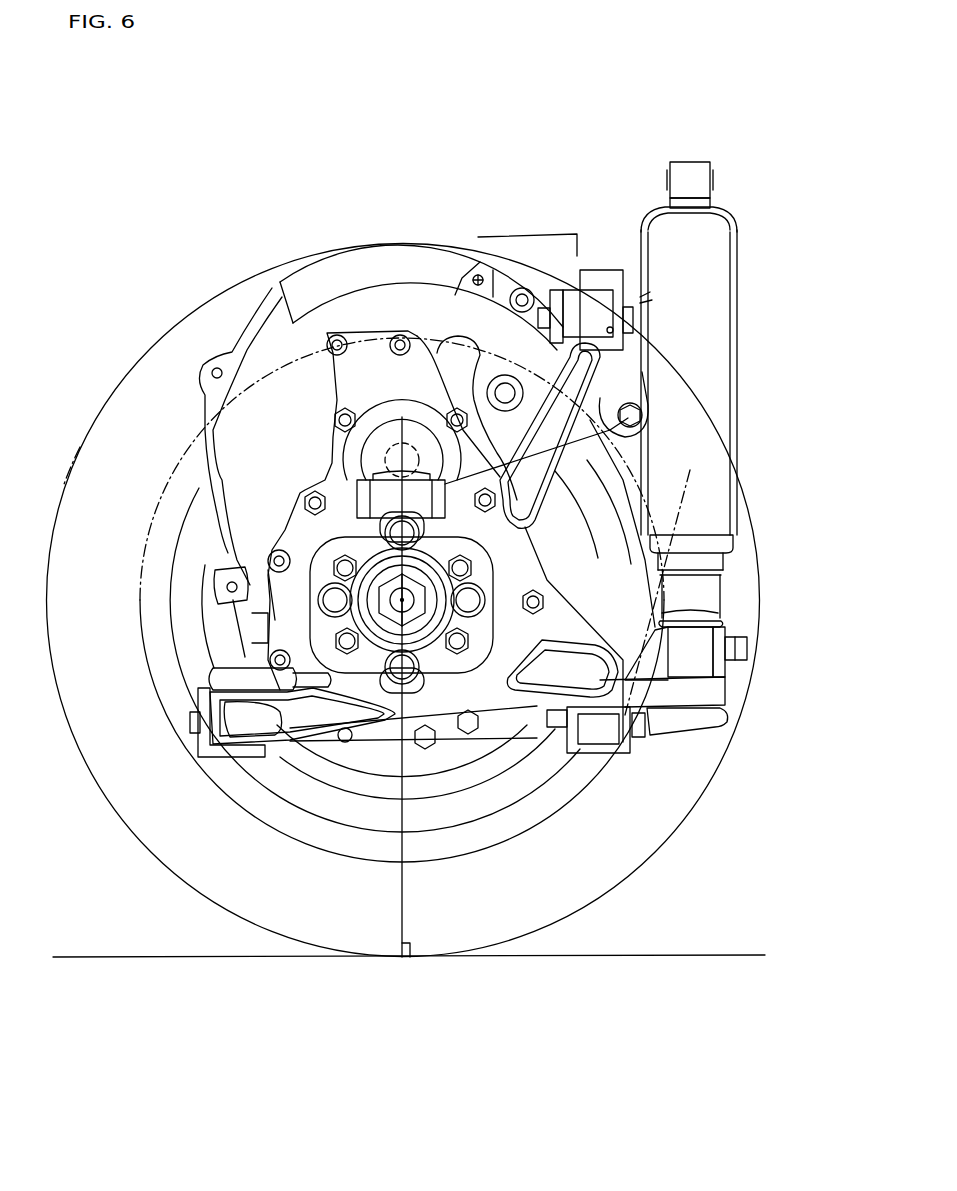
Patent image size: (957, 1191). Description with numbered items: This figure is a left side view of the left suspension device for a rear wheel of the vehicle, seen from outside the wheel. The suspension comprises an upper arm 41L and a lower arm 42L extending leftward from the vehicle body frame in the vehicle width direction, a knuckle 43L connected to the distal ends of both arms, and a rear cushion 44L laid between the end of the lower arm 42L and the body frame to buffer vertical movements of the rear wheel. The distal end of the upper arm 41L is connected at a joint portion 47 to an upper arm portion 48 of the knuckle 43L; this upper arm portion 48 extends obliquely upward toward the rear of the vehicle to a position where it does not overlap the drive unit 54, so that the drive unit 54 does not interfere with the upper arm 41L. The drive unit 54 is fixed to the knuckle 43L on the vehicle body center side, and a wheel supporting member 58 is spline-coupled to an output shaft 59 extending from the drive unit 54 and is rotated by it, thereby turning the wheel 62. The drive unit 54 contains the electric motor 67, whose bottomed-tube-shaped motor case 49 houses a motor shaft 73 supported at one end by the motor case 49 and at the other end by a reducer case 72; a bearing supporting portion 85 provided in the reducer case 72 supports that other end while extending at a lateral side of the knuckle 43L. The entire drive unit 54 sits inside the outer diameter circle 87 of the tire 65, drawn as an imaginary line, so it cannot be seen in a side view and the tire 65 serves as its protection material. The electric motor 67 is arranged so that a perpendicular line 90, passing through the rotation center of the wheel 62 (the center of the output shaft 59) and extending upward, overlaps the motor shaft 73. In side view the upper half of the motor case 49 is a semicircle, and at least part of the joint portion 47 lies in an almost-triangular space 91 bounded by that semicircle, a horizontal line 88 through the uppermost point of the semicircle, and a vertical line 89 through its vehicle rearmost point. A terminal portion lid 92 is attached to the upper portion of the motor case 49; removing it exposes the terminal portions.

The upper arm 41L is at (604, 272).
The lower arm 42L is at (605, 750).
The knuckle 43L is at (560, 547).
The rear cushion 44L is at (716, 370).
The joint portion 47 is at (640, 297).
The upper arm portion 48 is at (610, 330).
The motor case 49 is at (362, 318).
The drive unit 54 is at (423, 237).
The wheel supporting member 58 is at (423, 657).
The output shaft 59 is at (402, 600).
The wheel 62 is at (268, 810).
The tire 65 is at (143, 403).
The electric motor 67 is at (290, 265).
The reducer case 72 is at (373, 373).
The motor shaft 73 is at (380, 462).
The bearing supporting portion 85 is at (410, 420).
The outer diameter circle 87 is at (257, 277).
The horizontal line 88 is at (520, 237).
The vertical line 89 is at (577, 256).
The perpendicular line 90 is at (402, 498).
The almost-triangular space 91 is at (551, 252).
The terminal portion lid 92 is at (363, 263).